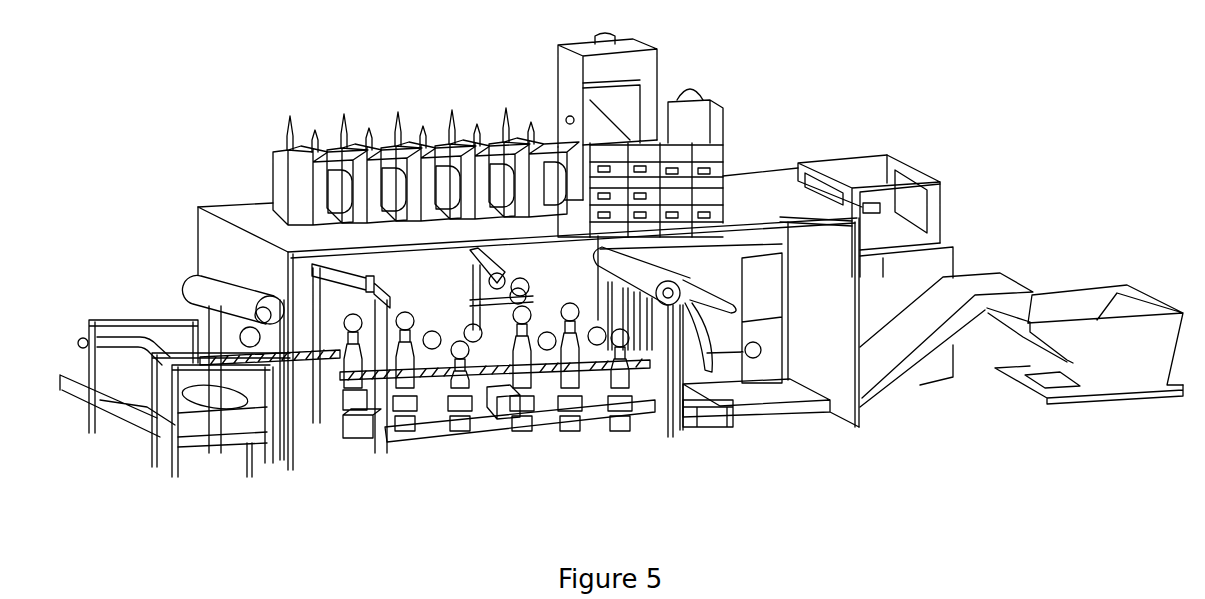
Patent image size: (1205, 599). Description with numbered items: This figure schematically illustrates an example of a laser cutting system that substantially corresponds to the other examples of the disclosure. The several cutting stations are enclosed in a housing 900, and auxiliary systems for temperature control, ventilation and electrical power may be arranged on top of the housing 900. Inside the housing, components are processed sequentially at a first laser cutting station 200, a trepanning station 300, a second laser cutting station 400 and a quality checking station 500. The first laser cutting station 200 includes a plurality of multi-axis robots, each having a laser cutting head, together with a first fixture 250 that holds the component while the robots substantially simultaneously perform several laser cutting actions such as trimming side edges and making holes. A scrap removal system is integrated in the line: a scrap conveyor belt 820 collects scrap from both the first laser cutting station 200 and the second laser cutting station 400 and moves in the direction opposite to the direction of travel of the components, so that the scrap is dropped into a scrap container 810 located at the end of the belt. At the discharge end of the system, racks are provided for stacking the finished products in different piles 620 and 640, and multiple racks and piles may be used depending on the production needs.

The housing 900 is at (240, 212).
The pile 640 is at (120, 427).
The pile 620 is at (217, 443).
The quality checking station 500 is at (377, 473).
The second laser cutting station 400 is at (487, 465).
The trepanning station 300 is at (551, 462).
The first fixture 250 is at (528, 373).
The first laser cutting station 200 is at (653, 449).
The scrap conveyor belt 820 is at (910, 373).
The scrap container 810 is at (1140, 370).